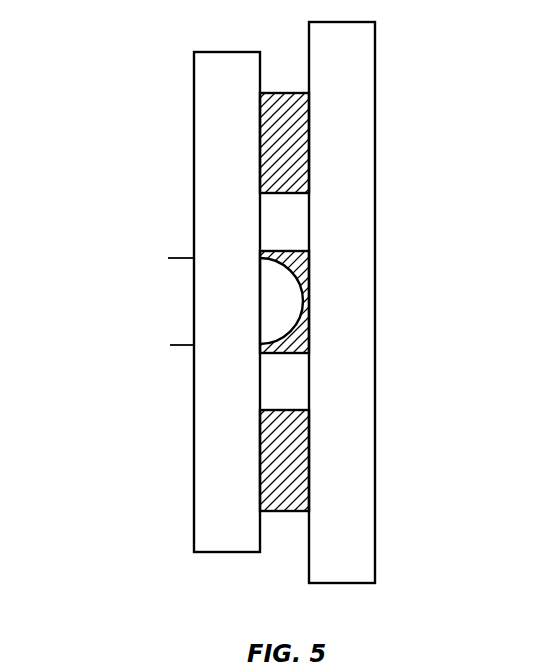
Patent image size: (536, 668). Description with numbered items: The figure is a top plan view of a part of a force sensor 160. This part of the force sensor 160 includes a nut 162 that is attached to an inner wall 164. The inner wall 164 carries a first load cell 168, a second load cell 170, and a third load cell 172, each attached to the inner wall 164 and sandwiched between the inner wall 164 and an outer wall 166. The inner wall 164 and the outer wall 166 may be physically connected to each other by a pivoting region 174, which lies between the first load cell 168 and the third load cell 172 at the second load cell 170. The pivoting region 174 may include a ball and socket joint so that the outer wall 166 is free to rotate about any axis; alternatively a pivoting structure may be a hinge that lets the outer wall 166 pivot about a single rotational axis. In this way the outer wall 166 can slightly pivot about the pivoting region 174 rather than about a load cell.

The force sensor 160 is at (127, 83).
The nut 162 is at (181, 347).
The inner wall 164 is at (203, 481).
The outer wall 166 is at (375, 520).
The first load cell 168 is at (298, 140).
The second load cell 170 is at (302, 261).
The third load cell 172 is at (298, 463).
The pivoting region 174 is at (288, 306).